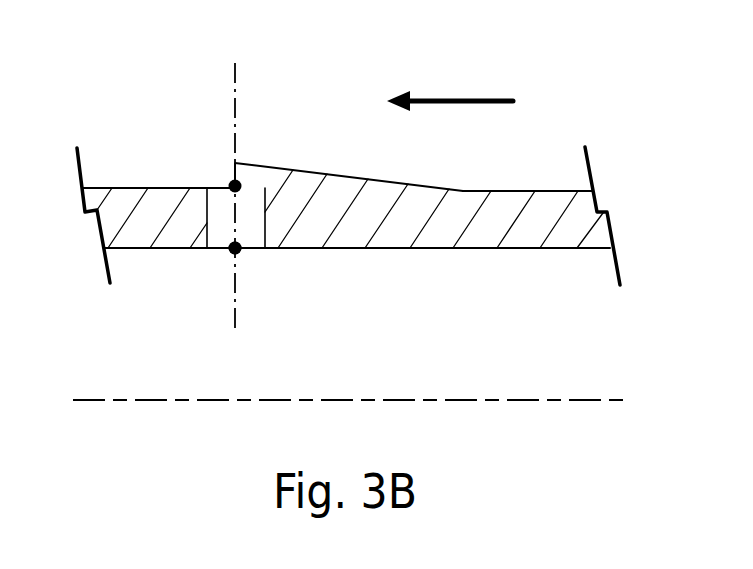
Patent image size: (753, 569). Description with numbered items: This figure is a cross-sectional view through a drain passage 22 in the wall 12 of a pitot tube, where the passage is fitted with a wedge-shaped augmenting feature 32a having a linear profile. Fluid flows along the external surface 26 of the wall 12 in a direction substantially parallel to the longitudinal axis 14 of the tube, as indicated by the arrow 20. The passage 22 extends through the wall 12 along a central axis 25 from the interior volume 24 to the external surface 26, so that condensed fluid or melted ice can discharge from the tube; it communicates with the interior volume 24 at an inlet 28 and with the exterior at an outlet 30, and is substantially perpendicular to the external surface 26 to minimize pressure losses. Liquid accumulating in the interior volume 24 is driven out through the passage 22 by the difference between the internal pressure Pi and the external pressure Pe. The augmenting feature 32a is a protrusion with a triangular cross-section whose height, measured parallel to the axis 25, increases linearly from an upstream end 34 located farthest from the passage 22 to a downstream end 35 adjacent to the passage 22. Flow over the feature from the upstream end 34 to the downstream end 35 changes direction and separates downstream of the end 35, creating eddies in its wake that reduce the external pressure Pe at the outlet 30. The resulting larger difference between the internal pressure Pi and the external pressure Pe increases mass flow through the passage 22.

The wall 12 is at (115, 167).
The longitudinal axis 14 is at (125, 400).
The arrow 20 is at (468, 98).
The passage 22 is at (217, 203).
The interior volume 24 is at (390, 315).
The central axis 25 is at (235, 63).
The external surface 26 is at (522, 190).
The inlet 28 is at (247, 262).
The outlet 30 is at (222, 150).
The augmenting feature 32a is at (294, 183).
The upstream end 34 is at (445, 175).
The downstream end 35 is at (242, 133).
The external pressure Pe is at (238, 182).
The internal pressure Pi is at (235, 252).